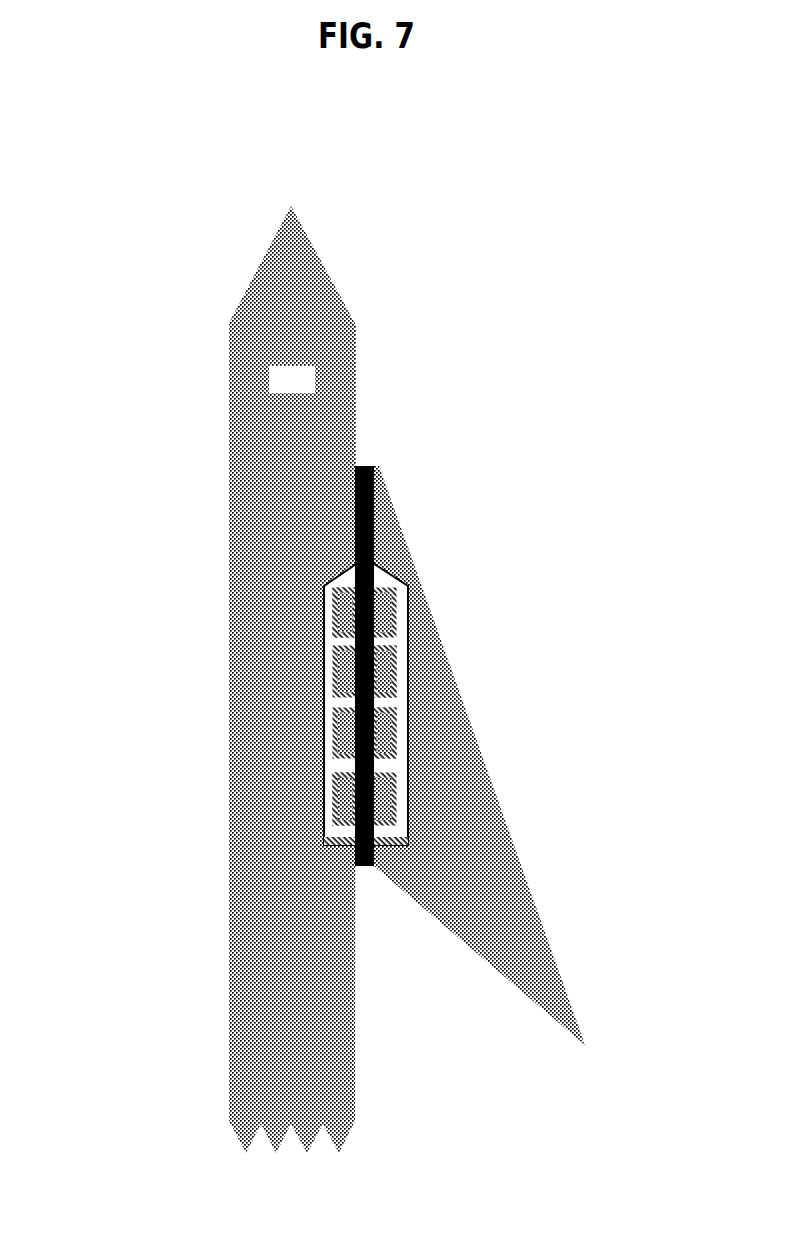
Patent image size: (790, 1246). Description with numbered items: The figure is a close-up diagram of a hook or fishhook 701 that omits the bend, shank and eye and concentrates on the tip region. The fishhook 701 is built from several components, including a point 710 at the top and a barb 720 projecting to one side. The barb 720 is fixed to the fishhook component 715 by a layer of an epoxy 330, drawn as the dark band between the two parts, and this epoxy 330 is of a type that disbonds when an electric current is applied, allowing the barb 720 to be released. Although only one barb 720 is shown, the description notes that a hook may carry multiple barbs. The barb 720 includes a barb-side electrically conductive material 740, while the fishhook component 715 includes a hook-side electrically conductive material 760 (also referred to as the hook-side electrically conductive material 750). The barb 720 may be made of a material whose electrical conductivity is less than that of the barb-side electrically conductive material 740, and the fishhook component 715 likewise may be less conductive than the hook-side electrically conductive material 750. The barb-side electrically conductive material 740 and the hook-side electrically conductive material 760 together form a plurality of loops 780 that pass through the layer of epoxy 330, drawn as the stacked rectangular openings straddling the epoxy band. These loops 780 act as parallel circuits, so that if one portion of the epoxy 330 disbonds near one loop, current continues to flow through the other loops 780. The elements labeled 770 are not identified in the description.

The fishhook 701 is at (130, 168).
The point 710 is at (292, 678).
The fishhook component 715 is at (292, 380).
The barb 720 is at (495, 755).
The epoxy 330 is at (370, 453).
The hook-side electrically conductive material 760 is at (315, 833).
The barb-side electrically conductive material 740 is at (385, 823).
The plurality of loops 780 is at (364, 698).
The left electrode frames 770 is at (330, 598).
The hook-side electrically conductive material 750 is at (378, 660).